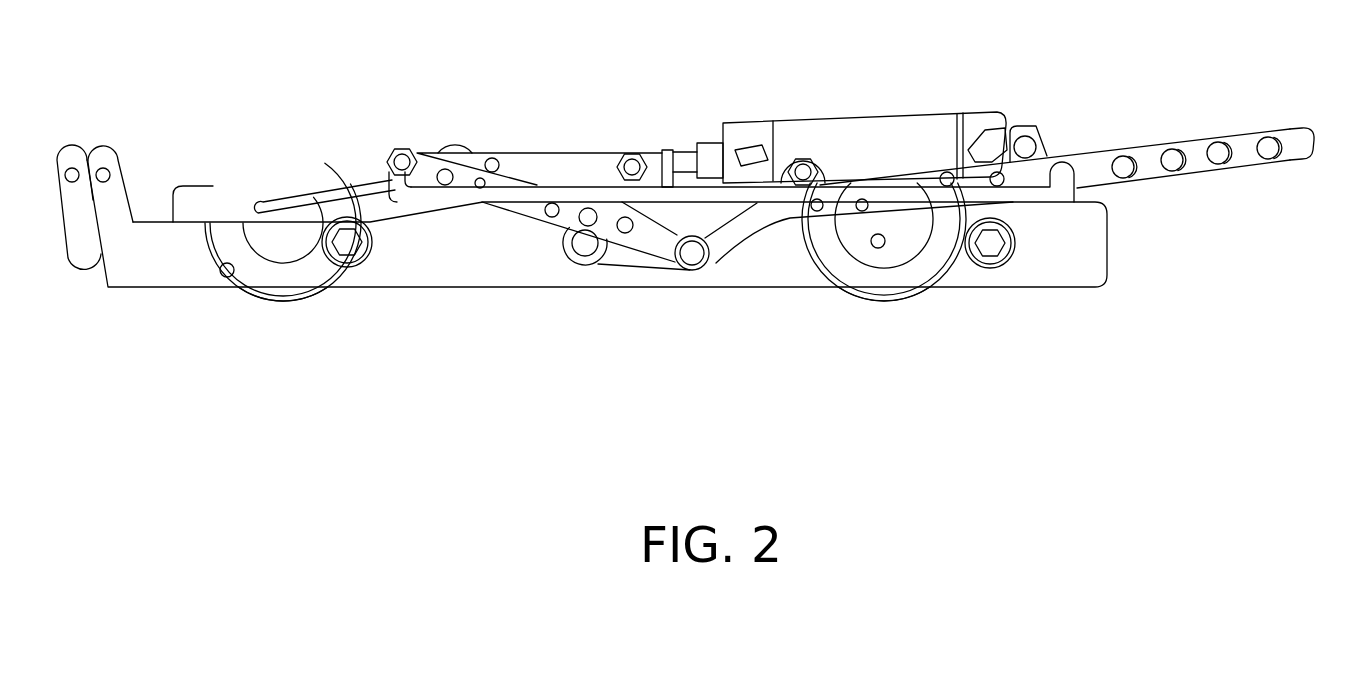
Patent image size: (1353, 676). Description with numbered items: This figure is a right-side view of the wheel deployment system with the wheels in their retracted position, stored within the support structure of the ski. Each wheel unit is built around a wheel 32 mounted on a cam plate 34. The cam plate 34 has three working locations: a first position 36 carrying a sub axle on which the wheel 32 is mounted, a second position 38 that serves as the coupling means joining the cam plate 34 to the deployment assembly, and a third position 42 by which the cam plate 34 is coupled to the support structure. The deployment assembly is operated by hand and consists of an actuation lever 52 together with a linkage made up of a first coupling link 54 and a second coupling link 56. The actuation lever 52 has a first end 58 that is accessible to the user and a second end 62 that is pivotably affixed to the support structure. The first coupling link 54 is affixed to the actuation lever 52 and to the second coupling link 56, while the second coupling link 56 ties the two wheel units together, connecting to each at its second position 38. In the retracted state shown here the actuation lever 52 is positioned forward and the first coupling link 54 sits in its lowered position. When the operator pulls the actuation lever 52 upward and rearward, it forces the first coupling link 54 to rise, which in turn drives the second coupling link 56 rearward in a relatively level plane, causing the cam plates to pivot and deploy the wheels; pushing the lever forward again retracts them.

The wheel 32 is at (282, 168).
The cam plate 34 is at (362, 208).
The first position 36 is at (290, 215).
The second position 38 is at (403, 147).
The third position 42 is at (345, 245).
The actuation lever 52 is at (1148, 163).
The first coupling link 54 is at (465, 182).
The second coupling link 56 is at (586, 195).
The first end 58 is at (1300, 132).
The second end 62 is at (628, 258).